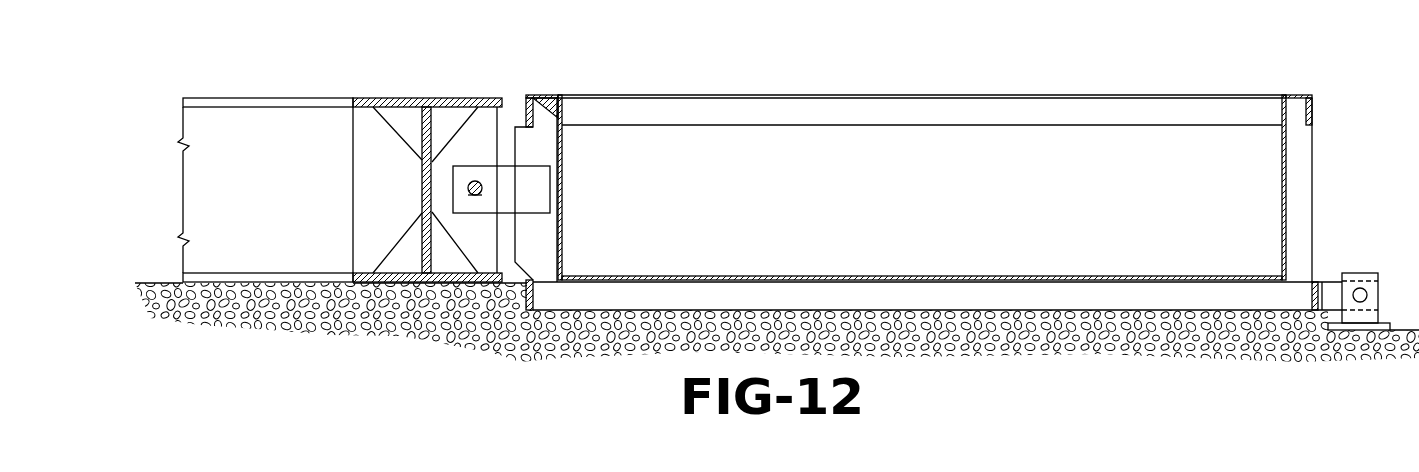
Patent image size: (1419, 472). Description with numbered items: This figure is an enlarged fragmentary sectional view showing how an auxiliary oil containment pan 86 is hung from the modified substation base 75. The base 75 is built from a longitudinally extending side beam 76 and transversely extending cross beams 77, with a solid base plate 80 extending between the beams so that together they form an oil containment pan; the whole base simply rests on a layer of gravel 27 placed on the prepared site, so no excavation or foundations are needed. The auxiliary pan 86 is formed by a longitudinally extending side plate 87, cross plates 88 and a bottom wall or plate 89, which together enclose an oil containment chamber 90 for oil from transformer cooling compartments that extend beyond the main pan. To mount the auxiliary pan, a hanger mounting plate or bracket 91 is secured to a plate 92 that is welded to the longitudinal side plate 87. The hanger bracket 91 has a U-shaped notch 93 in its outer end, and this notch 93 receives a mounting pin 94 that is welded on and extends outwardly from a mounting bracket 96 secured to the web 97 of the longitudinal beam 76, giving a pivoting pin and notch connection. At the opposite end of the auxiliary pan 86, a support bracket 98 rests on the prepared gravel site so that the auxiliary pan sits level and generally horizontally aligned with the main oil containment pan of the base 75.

The layer of gravel 27 is at (285, 325).
The base 75 is at (223, 153).
The longitudinally extending side beam 76 is at (397, 157).
The cross beam 77 is at (275, 98).
The base plate 80 is at (233, 280).
The auxiliary oil containment pan 86 is at (937, 165).
The longitudinally extending side plate 87 is at (562, 155).
The cross plate 88 is at (816, 160).
The bottom wall or plate 89 is at (732, 277).
The oil containment chamber 90 is at (1177, 157).
The hanger mounting plate or bracket 91 is at (540, 196).
The plate 92 is at (543, 232).
The U-shaped notch 93 is at (476, 203).
The mounting pin 94 is at (475, 181).
The mounting bracket 96 is at (440, 203).
The web 97 is at (420, 178).
The support bracket 98 is at (1360, 272).